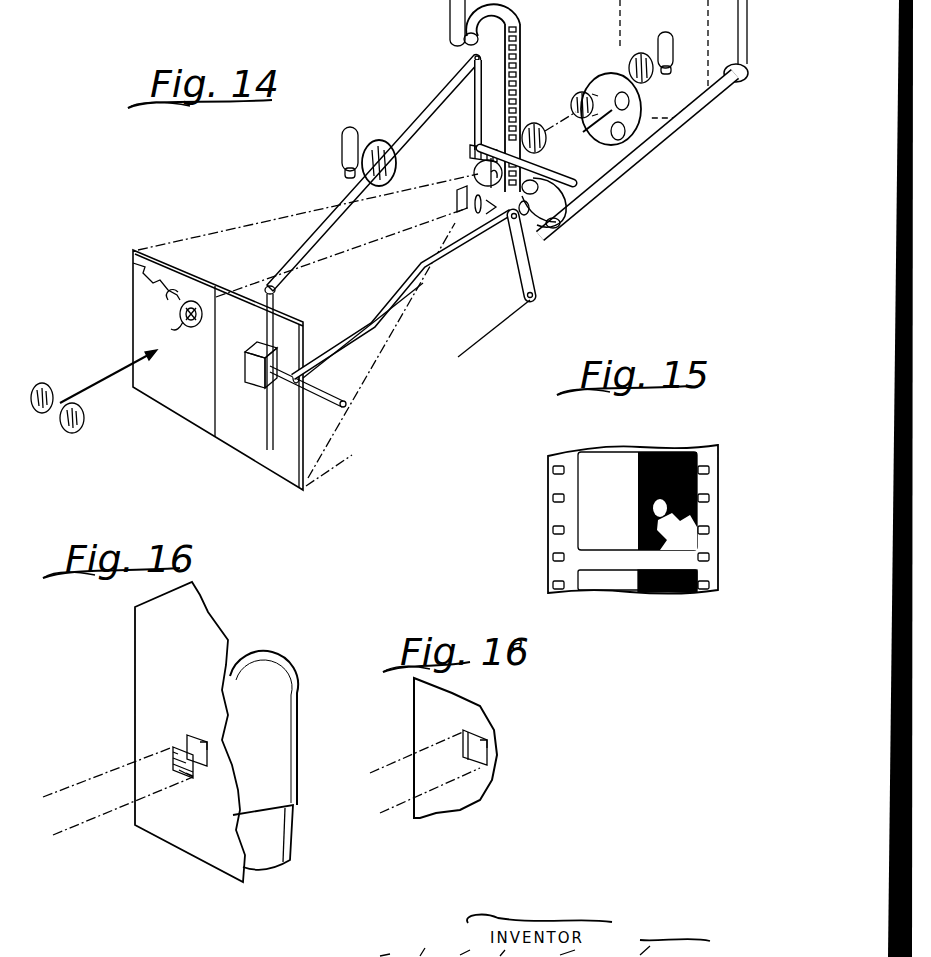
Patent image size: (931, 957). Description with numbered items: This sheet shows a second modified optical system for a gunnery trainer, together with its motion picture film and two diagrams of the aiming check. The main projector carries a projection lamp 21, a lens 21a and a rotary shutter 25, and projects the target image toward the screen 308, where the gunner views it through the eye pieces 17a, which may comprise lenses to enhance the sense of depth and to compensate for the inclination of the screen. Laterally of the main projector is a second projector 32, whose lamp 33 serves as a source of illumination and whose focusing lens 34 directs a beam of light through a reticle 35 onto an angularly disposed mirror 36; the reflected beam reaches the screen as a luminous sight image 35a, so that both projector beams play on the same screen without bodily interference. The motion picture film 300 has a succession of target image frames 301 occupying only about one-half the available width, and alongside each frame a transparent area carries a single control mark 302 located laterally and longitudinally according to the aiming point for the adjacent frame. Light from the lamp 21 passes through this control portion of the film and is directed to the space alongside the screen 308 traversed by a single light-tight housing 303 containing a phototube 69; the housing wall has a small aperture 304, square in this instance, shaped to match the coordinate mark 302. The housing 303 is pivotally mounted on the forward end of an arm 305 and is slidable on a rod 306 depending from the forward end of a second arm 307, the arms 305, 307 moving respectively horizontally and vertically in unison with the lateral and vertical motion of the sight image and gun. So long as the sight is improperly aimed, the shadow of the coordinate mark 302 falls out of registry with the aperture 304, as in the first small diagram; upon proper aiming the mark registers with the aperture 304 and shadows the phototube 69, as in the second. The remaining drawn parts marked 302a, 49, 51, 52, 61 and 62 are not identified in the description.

In FIG. 14, the eye pieces 17a is at (52, 386).
In FIG. 14, the projection lamp 21 is at (677, 27).
In FIG. 14, the lens 21a is at (642, 56).
In FIG. 14, the rotary shutter 25 is at (638, 110).
In FIG. 14, the second projector 32 is at (376, 126).
In FIG. 14, the lamp 33 is at (341, 142).
In FIG. 14, the focusing lens 34 is at (398, 170).
In FIG. 14, the reticle 35 is at (477, 175).
In FIG. 14, the sight image 35a is at (193, 327).
In FIG. 14, the mirror 36 is at (462, 205).
In FIG. 14, the reel 49 is at (568, 191).
In FIG. 14, the bar 51 is at (574, 179).
In FIG. 14, the link 52 is at (474, 127).
In FIG. 14, the rod 61 is at (504, 324).
In FIG. 14, the lever 62 is at (536, 275).
In FIG. 16, the phototube 69 is at (297, 723).
In FIG. 14, the motion picture film 300 is at (527, 63).
In FIG. 15, the motion picture film 300 is at (723, 480).
In FIG. 15, the target image frames 301 is at (678, 450).
In FIG. 15, the control mark 302 is at (595, 497).
In FIG. 16, the aperture 302a is at (178, 773).
In FIG. 14, the light-tight housing 303 is at (257, 373).
In FIG. 16, the light-tight housing 303 is at (143, 699).
In FIG. 16, the aperture 304 is at (209, 747).
In FIG. 16A, the aperture 304 is at (493, 746).
In FIG. 14, the arm 305 is at (450, 253).
In FIG. 14, the rod 306 is at (278, 291).
In FIG. 14, the second arm 307 is at (352, 197).
In FIG. 14, the screen 308 is at (227, 437).